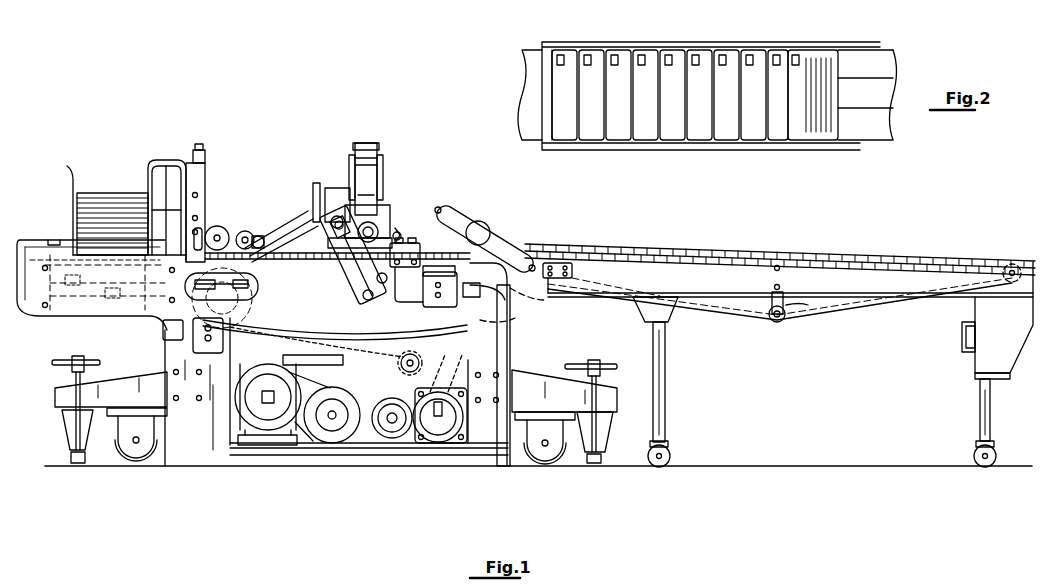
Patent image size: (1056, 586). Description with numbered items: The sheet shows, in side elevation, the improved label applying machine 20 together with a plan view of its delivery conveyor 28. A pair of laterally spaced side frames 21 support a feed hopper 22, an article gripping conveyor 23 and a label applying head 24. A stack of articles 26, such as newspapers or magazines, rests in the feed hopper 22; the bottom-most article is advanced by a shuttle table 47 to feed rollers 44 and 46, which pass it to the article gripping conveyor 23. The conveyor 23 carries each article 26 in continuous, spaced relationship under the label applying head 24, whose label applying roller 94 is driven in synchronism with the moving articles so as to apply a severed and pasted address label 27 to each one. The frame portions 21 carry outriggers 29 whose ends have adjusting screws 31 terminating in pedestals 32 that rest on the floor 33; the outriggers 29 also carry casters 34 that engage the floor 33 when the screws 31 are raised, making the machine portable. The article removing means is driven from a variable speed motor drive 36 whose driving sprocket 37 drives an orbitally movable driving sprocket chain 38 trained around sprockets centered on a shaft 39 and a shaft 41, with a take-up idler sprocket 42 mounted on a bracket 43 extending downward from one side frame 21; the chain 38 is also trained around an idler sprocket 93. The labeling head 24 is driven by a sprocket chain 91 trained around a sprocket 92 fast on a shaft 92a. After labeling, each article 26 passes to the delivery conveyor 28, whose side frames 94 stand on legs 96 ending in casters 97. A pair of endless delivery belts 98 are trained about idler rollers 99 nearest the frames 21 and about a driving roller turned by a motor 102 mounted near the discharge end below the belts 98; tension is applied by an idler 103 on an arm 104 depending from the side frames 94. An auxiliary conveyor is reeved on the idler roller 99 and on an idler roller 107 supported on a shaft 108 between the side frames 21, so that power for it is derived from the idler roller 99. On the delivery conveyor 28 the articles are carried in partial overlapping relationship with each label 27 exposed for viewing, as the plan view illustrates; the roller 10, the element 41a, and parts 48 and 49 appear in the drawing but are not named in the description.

In FIG. 1, the roller 10 is at (1024, 277).
In FIG. 1, the label applying machine 20 is at (421, 168).
In FIG. 1, the side frames 21 is at (165, 349).
In FIG. 1, the feed hopper 22 is at (118, 178).
In FIG. 1, the article gripping conveyor 23 is at (298, 248).
In FIG. 1, the label applying head 24 is at (367, 142).
In FIG. 1, the articles 26 is at (122, 195).
In FIG. 2, the articles 26 is at (803, 52).
In FIG. 2, the address label 27 is at (716, 52).
In FIG. 1, the delivery conveyor 28 is at (824, 240).
In FIG. 1, the outriggers 29 is at (112, 383).
In FIG. 1, the adjusting screws 31 is at (77, 358).
In FIG. 1, the pedestals 32 is at (80, 466).
In FIG. 1, the floor 33 is at (700, 466).
In FIG. 1, the casters 34 is at (142, 462).
In FIG. 1, the variable speed motor drive 36 is at (440, 432).
In FIG. 1, the driving sprocket 37 is at (464, 392).
In FIG. 1, the driving sprocket chain 38 is at (244, 233).
In FIG. 1, the shaft 39 is at (504, 287).
In FIG. 1, the shaft 41 is at (260, 276).
In FIG. 1, the cam track 41a is at (272, 301).
In FIG. 1, the take-up idler sprocket 42 is at (400, 364).
In FIG. 1, the bracket 43 is at (425, 331).
In FIG. 1, the feed roller 44 is at (196, 392).
In FIG. 1, the feed roller 46 is at (203, 228).
In FIG. 1, the shuttle table 47 is at (92, 256).
In FIG. 1, the motor 48 is at (281, 322).
In FIG. 1, the cam 49 is at (515, 318).
In FIG. 1, the sprocket chain 91 is at (300, 246).
In FIG. 1, the sprocket 92 is at (258, 236).
In FIG. 1, the shaft 92a is at (247, 234).
In FIG. 1, the idler sprocket 93 is at (218, 228).
In FIG. 1, the label applying roller / side frames 94 is at (396, 228).
In FIG. 1, the legs 96 is at (666, 390).
In FIG. 1, the casters 97 is at (669, 446).
In FIG. 1, the endless delivery belts 98 is at (718, 257).
In FIG. 2, the endless delivery belts 98 is at (885, 63).
In FIG. 1, the idler rollers 99 is at (545, 300).
In FIG. 1, the motor 102 is at (962, 352).
In FIG. 1, the idler 103 is at (782, 322).
In FIG. 1, the arm 104 is at (808, 306).
In FIG. 1, the idler roller 107 is at (455, 265).
In FIG. 1, the shaft 108 is at (476, 214).